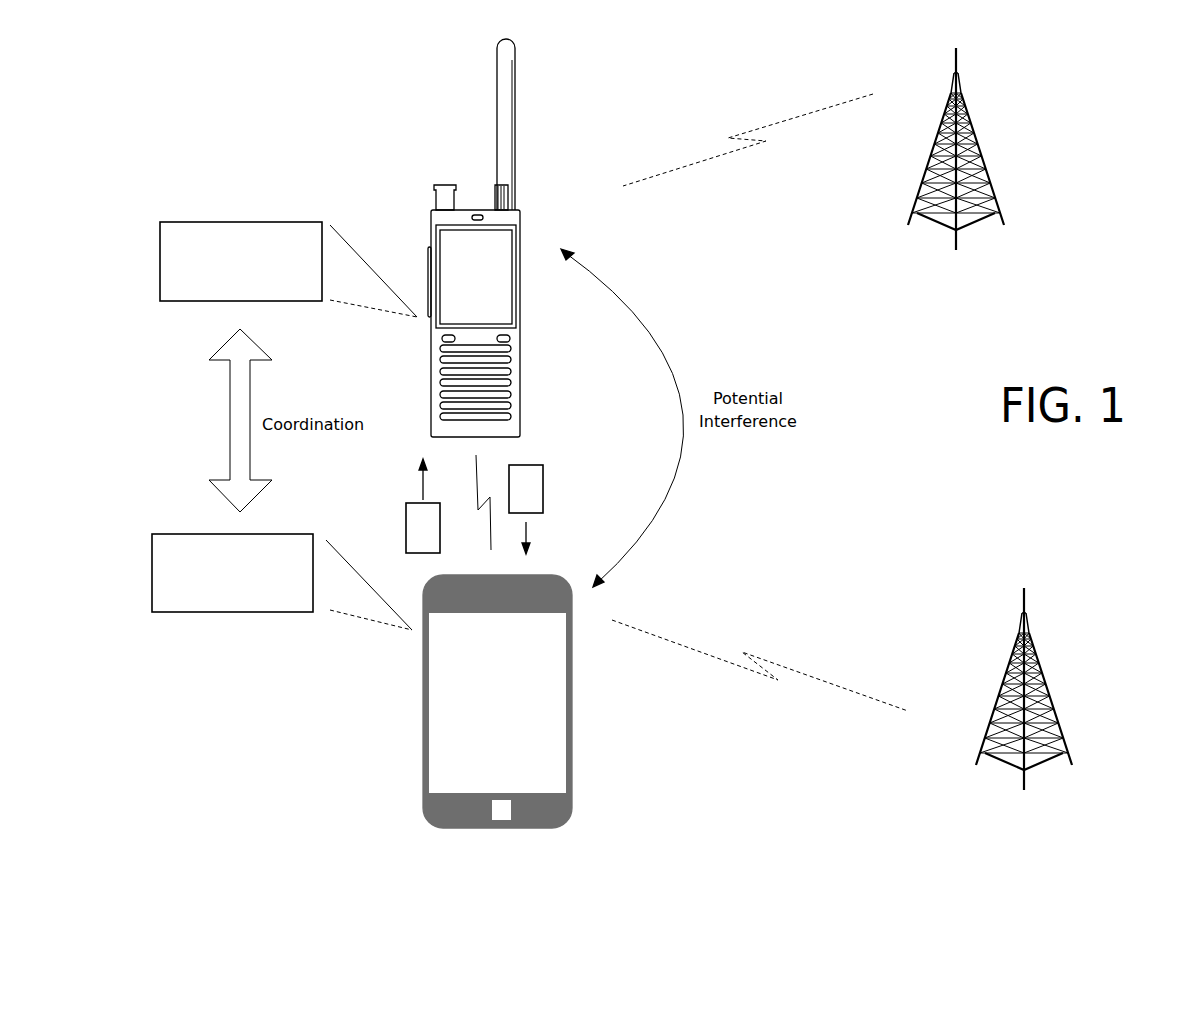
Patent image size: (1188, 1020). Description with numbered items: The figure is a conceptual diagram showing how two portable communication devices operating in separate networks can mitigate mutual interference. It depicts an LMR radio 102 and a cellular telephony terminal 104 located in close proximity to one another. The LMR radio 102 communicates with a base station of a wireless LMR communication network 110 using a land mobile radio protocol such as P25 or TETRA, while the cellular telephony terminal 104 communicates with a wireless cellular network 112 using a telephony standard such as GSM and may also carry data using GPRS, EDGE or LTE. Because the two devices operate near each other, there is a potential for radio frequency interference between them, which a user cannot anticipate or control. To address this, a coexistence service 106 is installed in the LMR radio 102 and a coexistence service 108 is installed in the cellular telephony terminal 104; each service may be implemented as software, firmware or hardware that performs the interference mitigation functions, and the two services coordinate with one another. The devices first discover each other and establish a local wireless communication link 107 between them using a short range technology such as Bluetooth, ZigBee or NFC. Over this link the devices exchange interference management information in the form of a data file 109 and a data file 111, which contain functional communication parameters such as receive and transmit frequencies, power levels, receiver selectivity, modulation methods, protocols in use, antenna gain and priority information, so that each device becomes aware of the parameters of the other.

The LMR radio 102 is at (474, 238).
The cellular telephony terminal 104 is at (497, 701).
The coexistence service 106 is at (288, 269).
The local wireless communication link 107 is at (475, 502).
The coexistence service 108 is at (282, 582).
The data file 109 is at (423, 506).
The wireless LMR communication network 110 is at (976, 127).
The data file 111 is at (526, 509).
The wireless cellular network 112 is at (1062, 667).